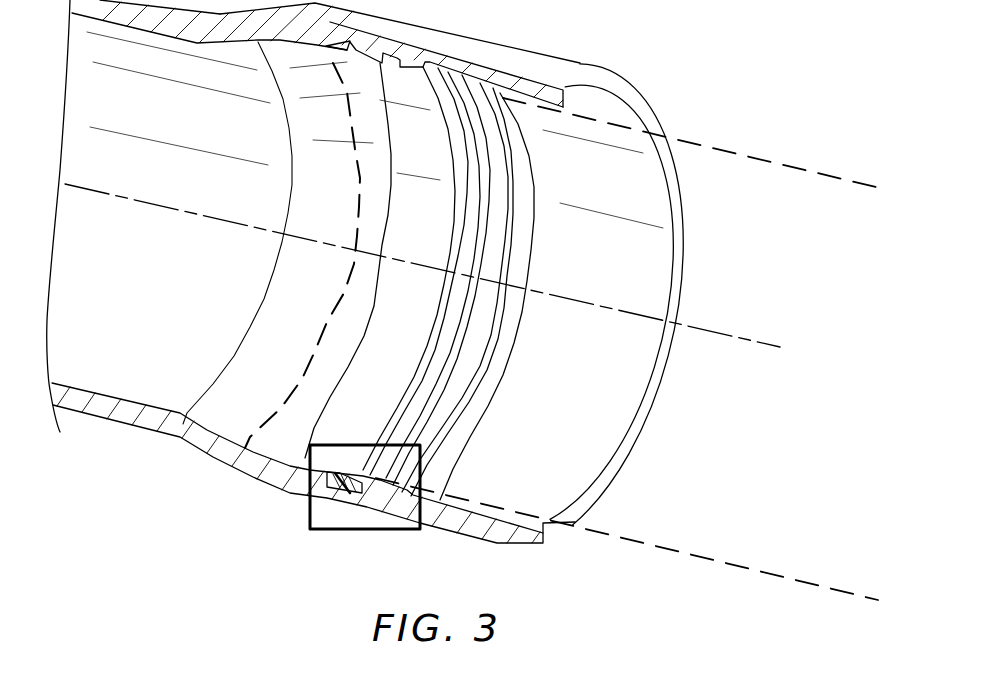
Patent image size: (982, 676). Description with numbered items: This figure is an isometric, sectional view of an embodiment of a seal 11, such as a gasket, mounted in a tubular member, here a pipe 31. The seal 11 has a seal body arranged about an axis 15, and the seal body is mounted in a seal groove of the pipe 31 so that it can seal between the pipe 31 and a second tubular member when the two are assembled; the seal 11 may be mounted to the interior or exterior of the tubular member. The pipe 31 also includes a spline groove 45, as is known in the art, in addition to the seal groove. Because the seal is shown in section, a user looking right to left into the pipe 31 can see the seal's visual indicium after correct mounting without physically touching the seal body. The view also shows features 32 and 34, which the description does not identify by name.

The seal 11 is at (412, 372).
The axis 15 is at (727, 336).
The pipe 31 is at (698, 310).
The second pipe (hidden outline) 32 is at (743, 158).
The first pipe 34 is at (268, 424).
The spline groove 45 is at (470, 407).